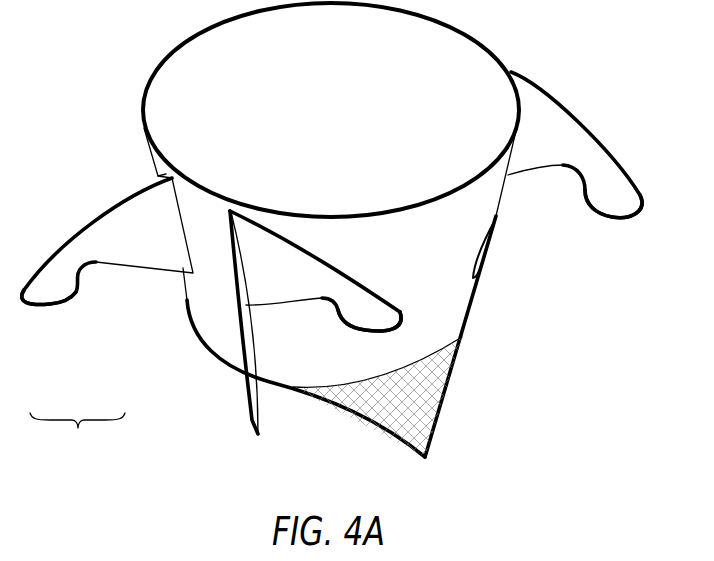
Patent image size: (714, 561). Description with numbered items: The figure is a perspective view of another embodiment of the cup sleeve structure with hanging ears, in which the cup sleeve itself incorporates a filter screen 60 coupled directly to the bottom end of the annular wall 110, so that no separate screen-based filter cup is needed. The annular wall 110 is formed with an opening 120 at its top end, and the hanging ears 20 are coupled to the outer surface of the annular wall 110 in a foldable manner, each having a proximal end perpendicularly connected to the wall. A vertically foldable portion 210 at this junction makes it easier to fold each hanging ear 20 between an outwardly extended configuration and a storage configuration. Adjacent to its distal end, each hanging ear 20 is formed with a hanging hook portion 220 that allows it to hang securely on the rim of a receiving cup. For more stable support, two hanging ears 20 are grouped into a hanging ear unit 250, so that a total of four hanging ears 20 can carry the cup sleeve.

The hanging ear 20 is at (598, 158).
The filter screen 60 is at (437, 405).
The annular wall 110 is at (455, 297).
The opening 120 is at (212, 82).
The vertically foldable portion 210 is at (234, 283).
The hanging hook portion 220 is at (577, 175).
The hanging ear unit 250 is at (77, 433).